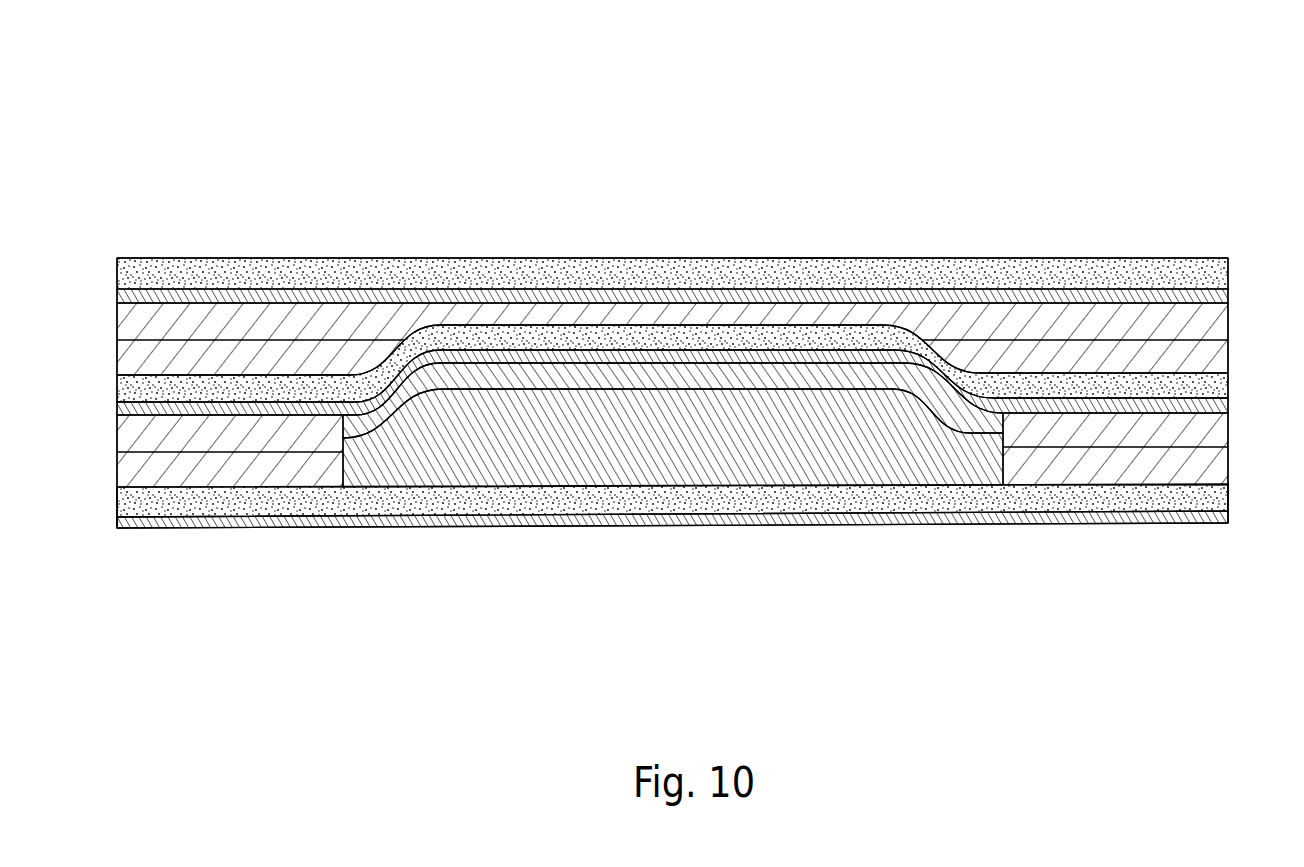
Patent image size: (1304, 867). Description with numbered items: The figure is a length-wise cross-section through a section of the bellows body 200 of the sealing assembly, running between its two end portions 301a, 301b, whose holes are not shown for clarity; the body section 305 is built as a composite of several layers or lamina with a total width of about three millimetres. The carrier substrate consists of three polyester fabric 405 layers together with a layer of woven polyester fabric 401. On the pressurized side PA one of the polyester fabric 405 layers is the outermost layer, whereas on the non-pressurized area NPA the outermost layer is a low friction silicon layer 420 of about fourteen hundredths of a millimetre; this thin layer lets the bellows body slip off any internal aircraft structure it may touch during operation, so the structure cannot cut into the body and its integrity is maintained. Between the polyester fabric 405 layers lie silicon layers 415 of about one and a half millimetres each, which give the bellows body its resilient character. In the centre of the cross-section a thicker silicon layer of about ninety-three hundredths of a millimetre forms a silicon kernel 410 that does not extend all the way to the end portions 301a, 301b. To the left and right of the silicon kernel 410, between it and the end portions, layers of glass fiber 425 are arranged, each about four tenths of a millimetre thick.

The display device 200 is at (508, 233).
The substrate 305 is at (445, 532).
The end portion 301a is at (113, 490).
The end portion 301b is at (1231, 493).
The woven polyester fabric layer 401 is at (410, 386).
The polyester fabric layers 405 is at (690, 343).
The silicon kernel 410 is at (895, 458).
The silicon layers 415 is at (1100, 405).
The low friction silicon layer 420 is at (1167, 519).
The glass fiber layers 425 is at (130, 320).
The pressurized side PA is at (833, 112).
The non-pressurized area NPA is at (732, 668).